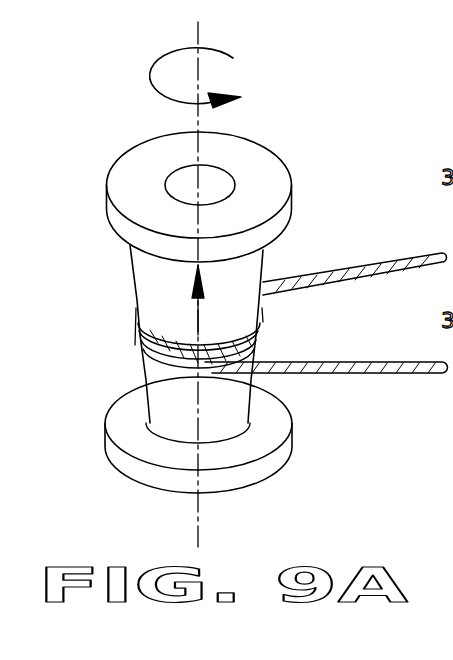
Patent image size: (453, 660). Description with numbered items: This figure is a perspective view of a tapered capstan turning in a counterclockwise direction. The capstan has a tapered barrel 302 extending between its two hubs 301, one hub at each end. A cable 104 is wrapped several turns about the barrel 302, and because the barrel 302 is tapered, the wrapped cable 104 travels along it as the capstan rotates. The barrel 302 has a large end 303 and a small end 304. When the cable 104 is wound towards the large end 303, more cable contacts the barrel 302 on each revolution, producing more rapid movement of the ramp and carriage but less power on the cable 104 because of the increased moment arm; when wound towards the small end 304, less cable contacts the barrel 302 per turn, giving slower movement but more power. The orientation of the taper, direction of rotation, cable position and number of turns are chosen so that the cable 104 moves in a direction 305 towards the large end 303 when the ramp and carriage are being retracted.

The hubs 301 is at (122, 162).
The tapered barrel 302 is at (291, 255).
The large end 303 is at (130, 249).
The small end 304 is at (150, 410).
The direction towards the large end 305 is at (197, 318).
The cable 104 is at (362, 375).